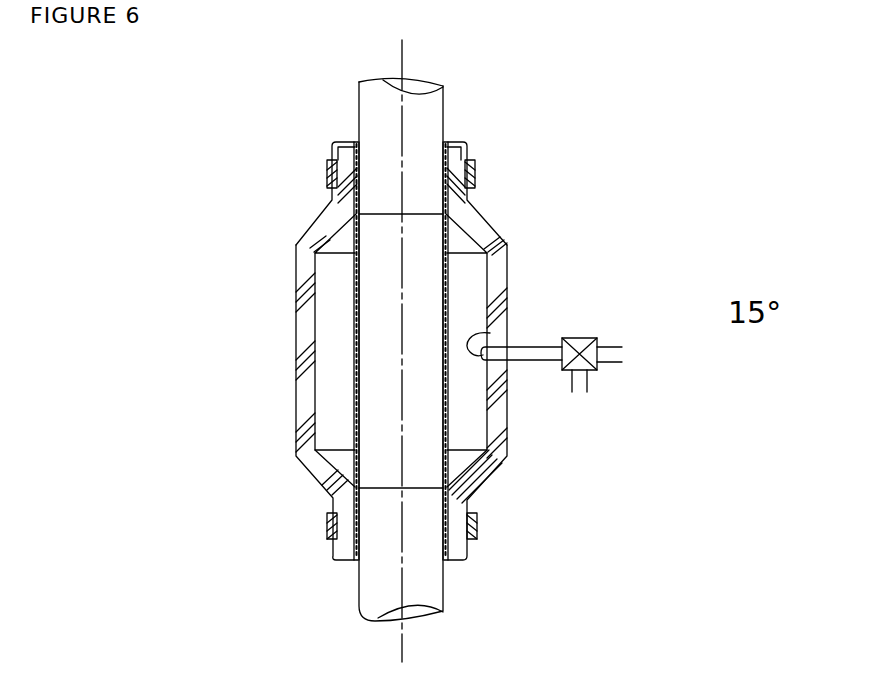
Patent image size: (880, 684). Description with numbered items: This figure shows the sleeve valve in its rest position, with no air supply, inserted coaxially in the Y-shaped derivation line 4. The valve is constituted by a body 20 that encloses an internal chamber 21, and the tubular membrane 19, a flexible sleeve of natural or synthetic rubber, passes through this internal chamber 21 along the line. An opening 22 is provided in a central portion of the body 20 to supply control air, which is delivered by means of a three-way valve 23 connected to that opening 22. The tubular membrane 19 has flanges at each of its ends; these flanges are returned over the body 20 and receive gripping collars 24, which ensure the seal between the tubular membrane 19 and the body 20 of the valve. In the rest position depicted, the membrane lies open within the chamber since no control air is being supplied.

The derivation line 4 is at (433, 577).
The tubular membrane 19 is at (447, 288).
The body 20 is at (477, 226).
The internal chamber 21 is at (468, 422).
The opening 22 is at (490, 323).
The three-way valve 23 is at (597, 370).
The gripping collars 24 is at (475, 178).